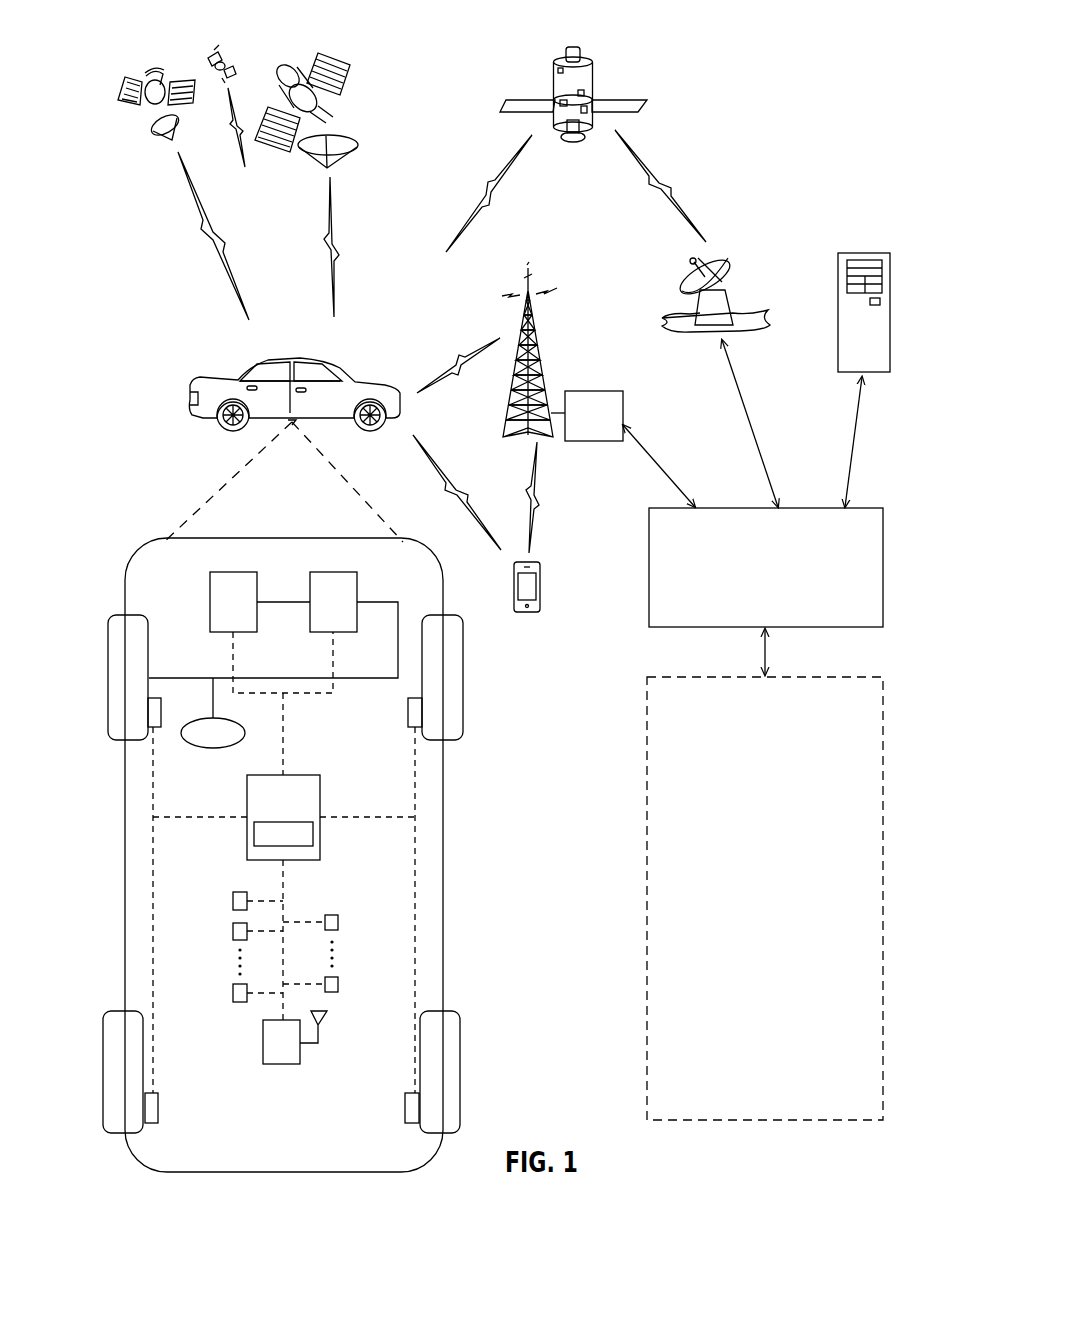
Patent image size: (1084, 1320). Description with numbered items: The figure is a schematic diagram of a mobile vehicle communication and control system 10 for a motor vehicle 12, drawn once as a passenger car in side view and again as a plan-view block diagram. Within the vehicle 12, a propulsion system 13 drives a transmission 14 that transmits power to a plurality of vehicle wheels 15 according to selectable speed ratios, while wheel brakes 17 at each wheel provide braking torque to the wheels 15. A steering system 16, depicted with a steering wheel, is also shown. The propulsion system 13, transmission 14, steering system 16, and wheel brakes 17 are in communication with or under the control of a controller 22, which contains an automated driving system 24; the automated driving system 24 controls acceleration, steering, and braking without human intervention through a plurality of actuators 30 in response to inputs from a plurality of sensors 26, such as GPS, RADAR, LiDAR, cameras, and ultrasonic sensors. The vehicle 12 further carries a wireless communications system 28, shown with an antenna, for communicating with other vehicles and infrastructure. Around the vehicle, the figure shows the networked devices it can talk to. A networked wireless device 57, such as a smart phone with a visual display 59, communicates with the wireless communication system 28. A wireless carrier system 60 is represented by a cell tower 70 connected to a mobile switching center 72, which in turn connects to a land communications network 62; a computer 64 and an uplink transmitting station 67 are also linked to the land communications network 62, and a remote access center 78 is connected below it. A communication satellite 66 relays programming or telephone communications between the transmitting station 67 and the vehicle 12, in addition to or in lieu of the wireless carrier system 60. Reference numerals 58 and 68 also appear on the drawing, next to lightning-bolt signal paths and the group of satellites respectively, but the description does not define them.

The mobile vehicle communication and control system 10 is at (808, 150).
The motor vehicle 12 is at (195, 405).
The propulsion system 13 is at (210, 600).
The transmission 14 is at (358, 590).
The vehicle wheels 15 is at (149, 640).
The steering system 16 is at (213, 749).
The wheel brakes 17 is at (157, 728).
The controller 22 is at (321, 823).
The automated driving system 24 is at (300, 847).
The sensors 26 is at (233, 901).
The wireless communications system 28 is at (282, 1065).
The actuators 30 is at (339, 923).
The networked wireless device 57 is at (541, 603).
The wireless signal 58 is at (453, 477).
The visual display 59 is at (532, 588).
The wireless carrier system 60 is at (510, 442).
The land communications network 62 is at (884, 568).
The computer 64 is at (890, 315).
The communication satellite 66 is at (593, 73).
The uplink transmitting station 67 is at (735, 312).
The GPS satellites 68 is at (357, 77).
The cell tower 70 is at (540, 342).
The mobile switching center 72 is at (595, 391).
The remote access center 78 is at (765, 1121).